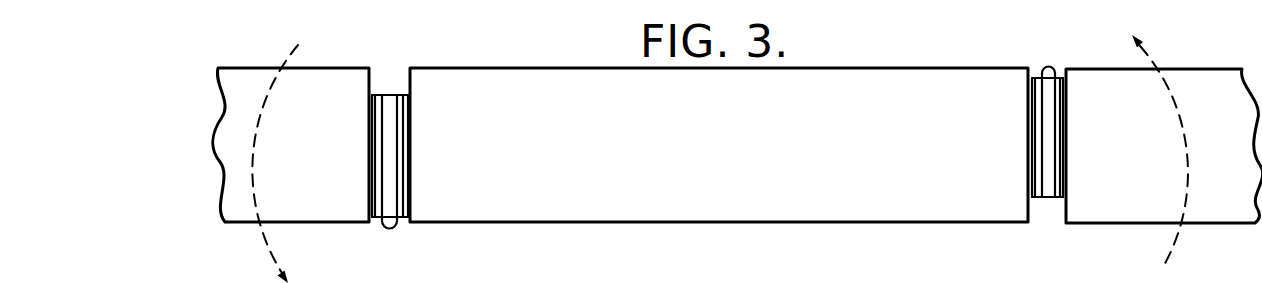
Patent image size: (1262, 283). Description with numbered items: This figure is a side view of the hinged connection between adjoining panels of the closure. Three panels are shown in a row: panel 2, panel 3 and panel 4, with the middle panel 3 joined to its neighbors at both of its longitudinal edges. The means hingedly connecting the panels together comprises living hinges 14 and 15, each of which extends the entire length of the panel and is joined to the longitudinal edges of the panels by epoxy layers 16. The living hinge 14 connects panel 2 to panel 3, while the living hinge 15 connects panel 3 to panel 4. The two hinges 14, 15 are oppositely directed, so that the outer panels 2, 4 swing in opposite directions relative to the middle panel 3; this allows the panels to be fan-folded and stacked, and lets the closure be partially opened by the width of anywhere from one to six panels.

The panel 2 is at (287, 207).
The panel 3 is at (718, 207).
The panel 4 is at (1145, 207).
The living hinge 14 is at (396, 87).
The living hinge 15 is at (1045, 212).
The epoxy layer 16 is at (372, 180).